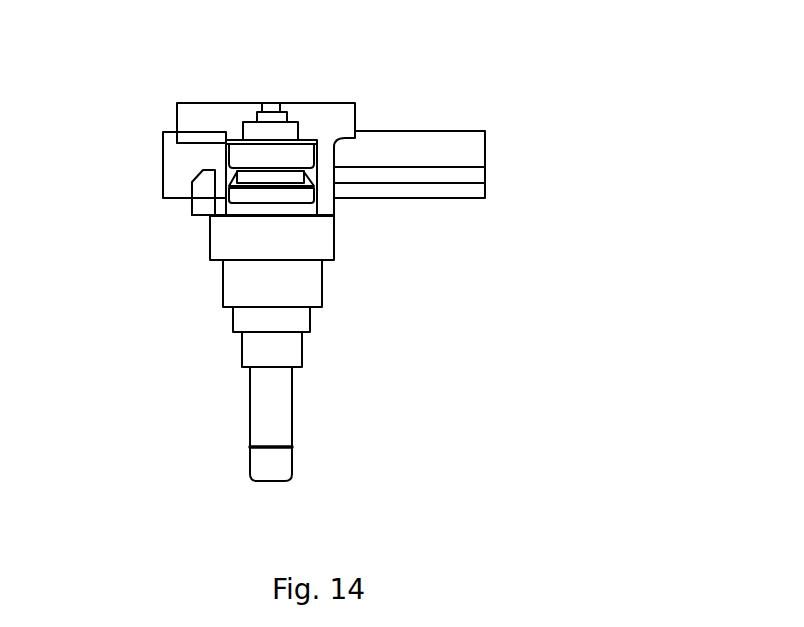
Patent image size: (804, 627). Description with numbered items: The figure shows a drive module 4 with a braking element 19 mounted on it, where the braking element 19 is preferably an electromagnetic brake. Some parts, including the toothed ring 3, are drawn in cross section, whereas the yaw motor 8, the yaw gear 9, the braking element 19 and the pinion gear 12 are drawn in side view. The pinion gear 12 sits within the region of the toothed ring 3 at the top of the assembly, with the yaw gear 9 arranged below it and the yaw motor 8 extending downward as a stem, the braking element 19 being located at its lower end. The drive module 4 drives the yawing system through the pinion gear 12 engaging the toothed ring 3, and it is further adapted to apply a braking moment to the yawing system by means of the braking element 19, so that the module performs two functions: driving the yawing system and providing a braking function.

The toothed ring 3 is at (193, 159).
The pinion gear 12 is at (277, 152).
The drive module 4 is at (470, 311).
The yaw gear 9 is at (302, 228).
The yaw motor 8 is at (282, 401).
The braking element 19 is at (283, 466).